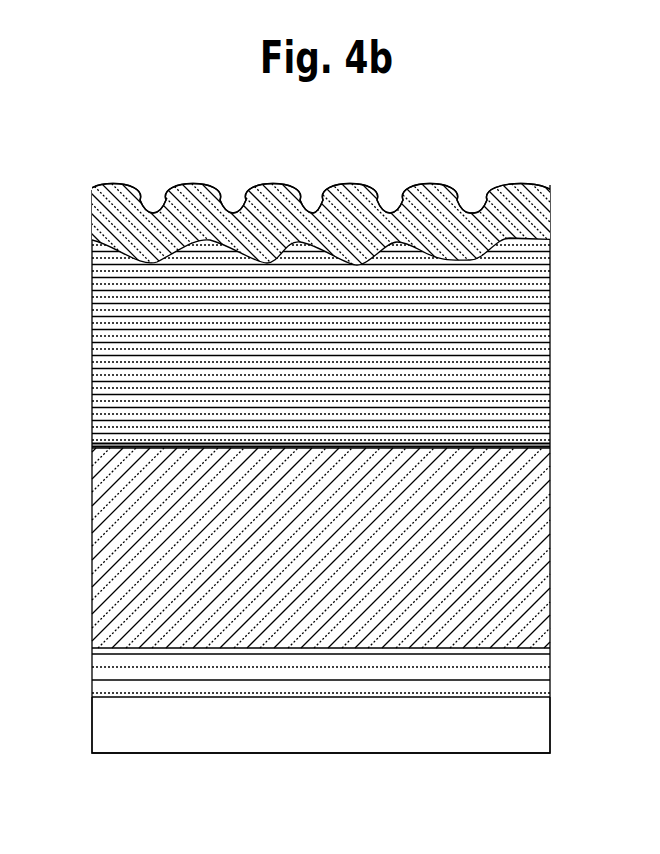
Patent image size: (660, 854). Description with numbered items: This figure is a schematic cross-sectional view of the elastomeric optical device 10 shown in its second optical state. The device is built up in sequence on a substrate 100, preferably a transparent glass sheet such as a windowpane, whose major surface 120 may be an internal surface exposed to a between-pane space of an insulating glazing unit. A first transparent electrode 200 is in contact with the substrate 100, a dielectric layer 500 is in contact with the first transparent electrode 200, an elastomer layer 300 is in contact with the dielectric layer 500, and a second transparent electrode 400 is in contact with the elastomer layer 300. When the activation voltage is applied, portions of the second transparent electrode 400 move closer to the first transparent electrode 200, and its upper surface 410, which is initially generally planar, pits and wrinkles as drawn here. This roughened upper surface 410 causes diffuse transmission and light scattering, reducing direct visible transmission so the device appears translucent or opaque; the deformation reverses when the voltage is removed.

The elastomeric optical device 10 is at (52, 156).
The substrate 100 is at (515, 737).
The surface 120 is at (463, 698).
The first transparent electrode 200 is at (533, 672).
The elastomer layer 300 is at (510, 345).
The second transparent electrode 400 is at (512, 218).
The upper surface 410 is at (109, 188).
The dielectric layer 500 is at (498, 542).